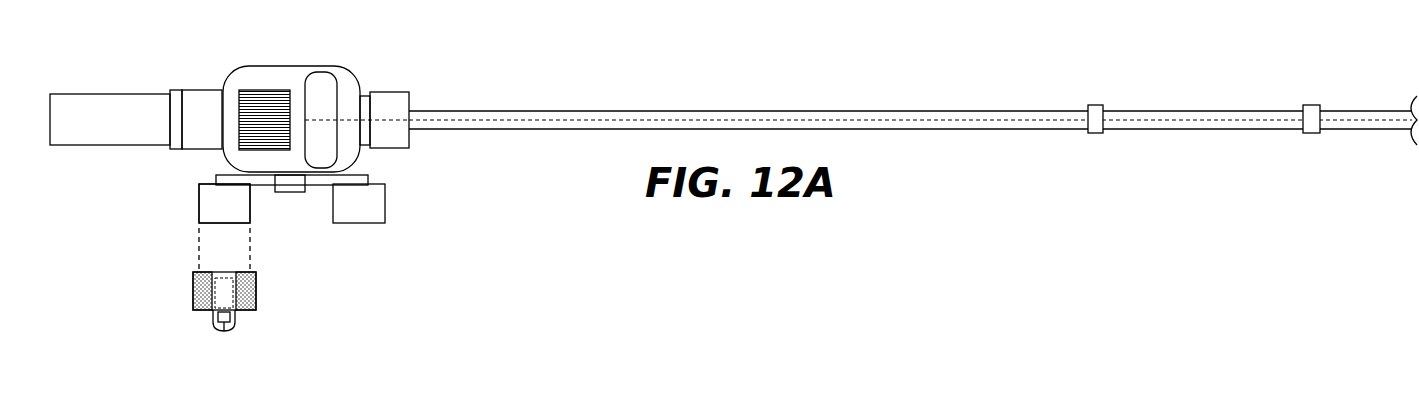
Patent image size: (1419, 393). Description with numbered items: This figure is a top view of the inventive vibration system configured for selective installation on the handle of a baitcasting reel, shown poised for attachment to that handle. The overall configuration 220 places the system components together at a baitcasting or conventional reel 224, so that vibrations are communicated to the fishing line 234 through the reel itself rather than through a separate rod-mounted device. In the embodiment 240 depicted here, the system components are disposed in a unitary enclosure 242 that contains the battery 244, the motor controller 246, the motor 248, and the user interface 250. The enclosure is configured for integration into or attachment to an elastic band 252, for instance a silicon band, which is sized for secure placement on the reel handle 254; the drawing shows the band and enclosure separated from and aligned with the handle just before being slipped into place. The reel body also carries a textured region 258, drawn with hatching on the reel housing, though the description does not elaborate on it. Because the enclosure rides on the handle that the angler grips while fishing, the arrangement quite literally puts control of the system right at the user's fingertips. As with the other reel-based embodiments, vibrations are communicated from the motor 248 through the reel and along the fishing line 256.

The configuration 220 is at (530, 62).
The baitcasting or conventional reel 224 is at (358, 82).
The fishing line 234 is at (662, 118).
The exemplary embodiment 240 is at (270, 278).
The unitary enclosure 242 is at (222, 331).
The battery 244 is at (217, 272).
The motor controller 246 is at (211, 318).
The motor 248 is at (206, 298).
The user interface 250 is at (231, 322).
The elastic band 252 is at (256, 292).
The reel handle 254 is at (210, 203).
The fishing line 256 is at (385, 120).
The grip pad 258 is at (269, 80).